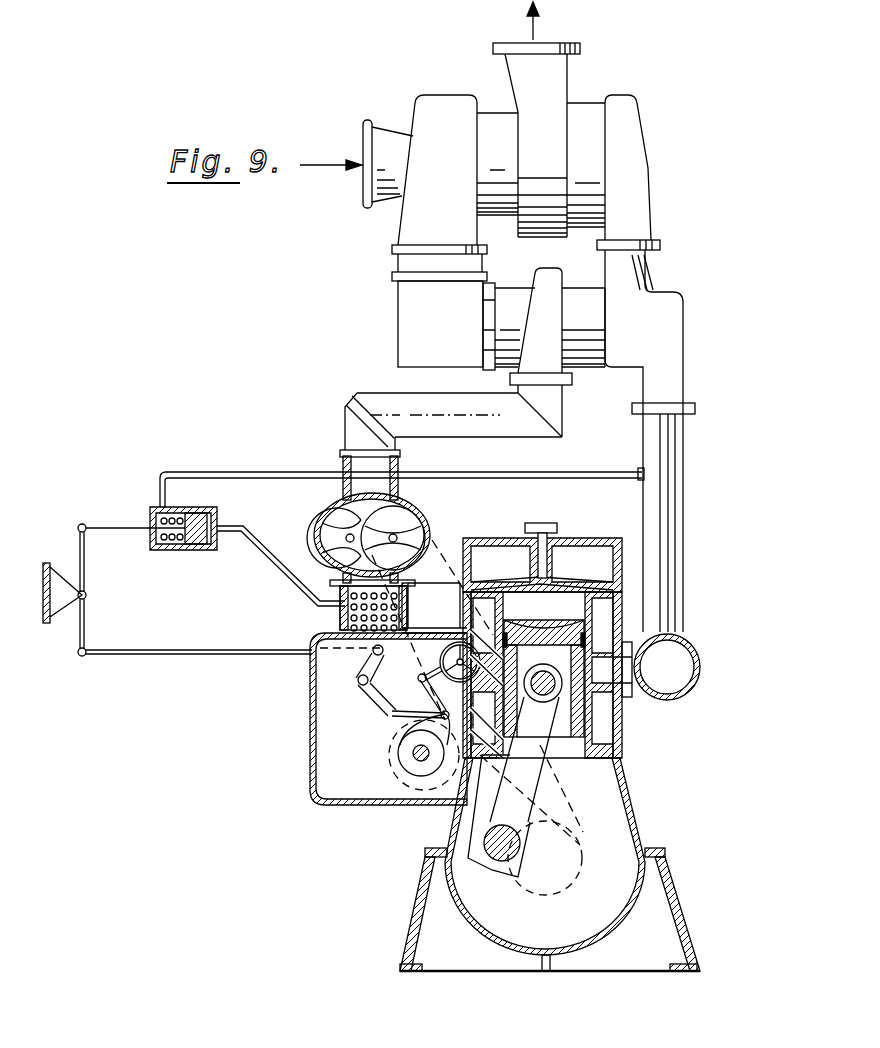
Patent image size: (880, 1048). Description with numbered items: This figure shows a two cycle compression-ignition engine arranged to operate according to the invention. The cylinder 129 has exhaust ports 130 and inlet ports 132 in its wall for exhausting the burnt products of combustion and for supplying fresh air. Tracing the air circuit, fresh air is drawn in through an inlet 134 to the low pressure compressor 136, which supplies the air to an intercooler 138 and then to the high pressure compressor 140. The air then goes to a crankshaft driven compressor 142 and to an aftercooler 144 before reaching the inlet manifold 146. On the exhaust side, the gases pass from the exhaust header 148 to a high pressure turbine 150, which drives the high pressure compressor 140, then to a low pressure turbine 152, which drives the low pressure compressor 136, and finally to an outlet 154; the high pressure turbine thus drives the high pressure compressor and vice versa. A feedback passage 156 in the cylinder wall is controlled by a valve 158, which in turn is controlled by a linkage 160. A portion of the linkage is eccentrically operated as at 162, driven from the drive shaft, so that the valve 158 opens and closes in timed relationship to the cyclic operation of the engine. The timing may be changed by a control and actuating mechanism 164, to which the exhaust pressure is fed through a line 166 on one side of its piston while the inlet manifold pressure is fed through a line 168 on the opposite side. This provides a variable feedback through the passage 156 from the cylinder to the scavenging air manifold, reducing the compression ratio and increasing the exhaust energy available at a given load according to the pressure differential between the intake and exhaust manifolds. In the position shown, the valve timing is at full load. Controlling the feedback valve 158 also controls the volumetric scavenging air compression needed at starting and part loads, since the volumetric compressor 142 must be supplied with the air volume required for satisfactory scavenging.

The cylinder 129 is at (565, 578).
The exhaust ports 130 is at (605, 668).
The inlet ports 132 is at (472, 676).
The inlet 134 is at (364, 200).
The low pressure compressor 136 is at (443, 100).
The intercooler 138 is at (400, 322).
The high pressure compressor 140 is at (550, 282).
The crankshaft driven compressor 142 is at (405, 520).
The aftercooler 144 is at (345, 614).
The inlet manifold 146 is at (310, 744).
The exhaust header 148 is at (700, 662).
The high pressure turbine 150 is at (668, 332).
The low pressure turbine 152 is at (645, 140).
The outlet 154 is at (570, 48).
The feedback passage 156 is at (498, 609).
The valve 158 is at (455, 640).
The linkage 160 is at (378, 712).
The eccentric 162 is at (422, 775).
The control and actuating mechanism 164 is at (195, 563).
The line 166 is at (296, 470).
The line 168 is at (278, 578).